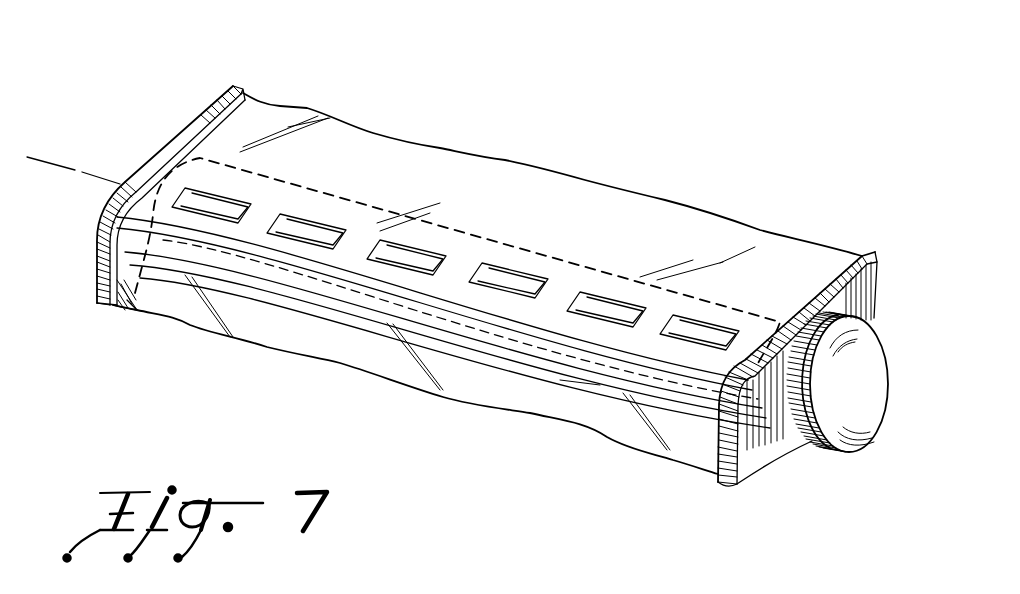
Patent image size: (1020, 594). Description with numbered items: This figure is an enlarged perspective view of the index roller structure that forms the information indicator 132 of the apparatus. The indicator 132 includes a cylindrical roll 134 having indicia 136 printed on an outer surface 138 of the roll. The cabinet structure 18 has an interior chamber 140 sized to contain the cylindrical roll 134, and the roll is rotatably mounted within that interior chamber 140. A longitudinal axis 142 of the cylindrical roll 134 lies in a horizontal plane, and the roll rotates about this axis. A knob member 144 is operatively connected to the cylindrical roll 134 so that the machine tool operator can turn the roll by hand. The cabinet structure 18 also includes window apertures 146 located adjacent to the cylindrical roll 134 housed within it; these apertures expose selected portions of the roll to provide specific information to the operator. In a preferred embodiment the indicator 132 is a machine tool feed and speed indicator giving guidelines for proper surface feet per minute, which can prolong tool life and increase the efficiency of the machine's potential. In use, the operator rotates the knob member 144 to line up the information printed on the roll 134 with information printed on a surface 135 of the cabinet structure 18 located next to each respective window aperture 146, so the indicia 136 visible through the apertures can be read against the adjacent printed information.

The cabinet structure 18 is at (237, 90).
The information indicator 132 is at (598, 383).
The cylindrical roll 134 is at (605, 277).
The surface 135 is at (393, 258).
The indicia 136 is at (418, 258).
The outer surface 138 is at (397, 253).
The interior chamber 140 is at (137, 310).
The longitudinal axis 142 is at (103, 177).
The knob member 144 is at (846, 410).
The window apertures 146 is at (290, 243).